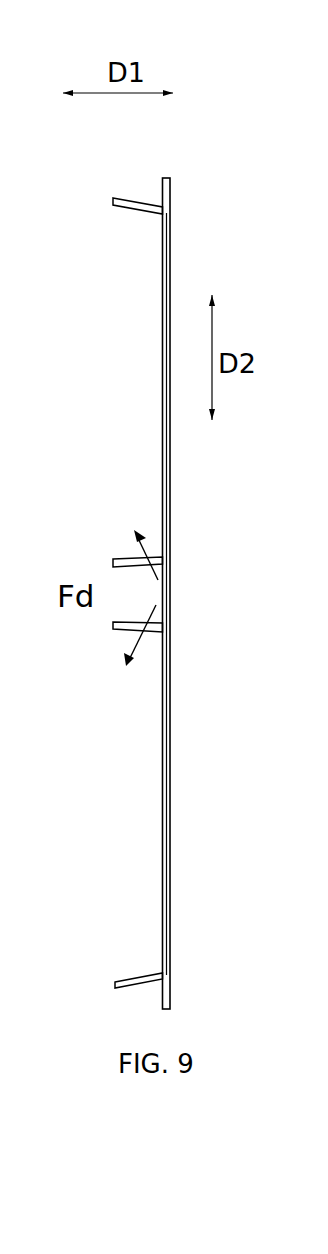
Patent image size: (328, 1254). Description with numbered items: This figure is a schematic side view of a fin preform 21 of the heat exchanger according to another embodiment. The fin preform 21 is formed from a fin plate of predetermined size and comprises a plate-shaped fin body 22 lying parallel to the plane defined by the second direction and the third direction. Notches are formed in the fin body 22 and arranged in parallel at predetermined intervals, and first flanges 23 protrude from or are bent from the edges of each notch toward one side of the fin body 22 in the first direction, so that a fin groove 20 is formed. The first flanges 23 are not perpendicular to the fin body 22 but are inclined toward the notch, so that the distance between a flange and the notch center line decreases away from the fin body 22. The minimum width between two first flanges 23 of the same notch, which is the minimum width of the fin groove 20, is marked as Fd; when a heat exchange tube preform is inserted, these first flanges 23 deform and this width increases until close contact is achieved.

The fin groove 20 is at (149, 569).
The fin preform 21 is at (174, 191).
The fin body 22 is at (162, 352).
The first flange 23 is at (118, 563).